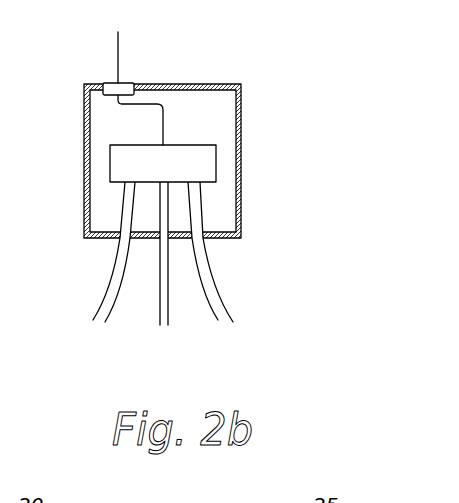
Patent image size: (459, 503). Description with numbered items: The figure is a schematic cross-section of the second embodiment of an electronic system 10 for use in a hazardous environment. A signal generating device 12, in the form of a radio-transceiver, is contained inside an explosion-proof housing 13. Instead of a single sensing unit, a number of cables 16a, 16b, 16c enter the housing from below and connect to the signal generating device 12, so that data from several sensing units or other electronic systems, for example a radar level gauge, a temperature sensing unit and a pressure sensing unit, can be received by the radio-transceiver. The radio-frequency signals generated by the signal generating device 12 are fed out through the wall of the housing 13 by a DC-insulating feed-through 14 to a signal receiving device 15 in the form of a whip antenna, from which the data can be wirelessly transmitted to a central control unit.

The electronic system 10 is at (193, 183).
The signal generating device 12 is at (216, 156).
The explosion-proof housing 13 is at (242, 105).
The DC-insulating feed-through 14 is at (127, 83).
The signal receiving device 15 is at (120, 42).
The cable 16a is at (112, 287).
The cable 16b is at (170, 303).
The cable 16c is at (215, 288).